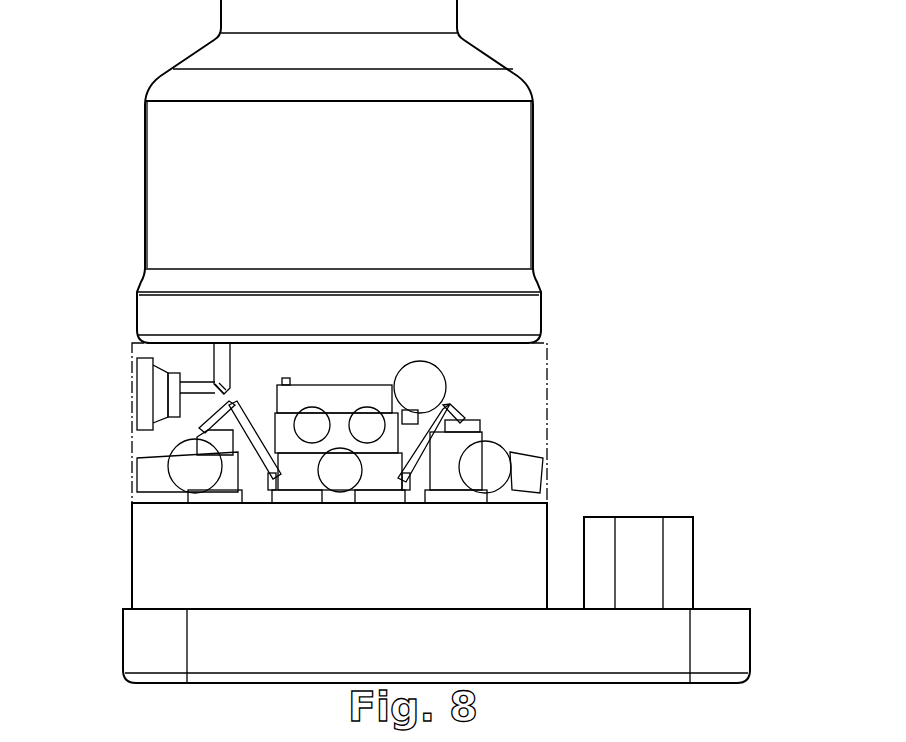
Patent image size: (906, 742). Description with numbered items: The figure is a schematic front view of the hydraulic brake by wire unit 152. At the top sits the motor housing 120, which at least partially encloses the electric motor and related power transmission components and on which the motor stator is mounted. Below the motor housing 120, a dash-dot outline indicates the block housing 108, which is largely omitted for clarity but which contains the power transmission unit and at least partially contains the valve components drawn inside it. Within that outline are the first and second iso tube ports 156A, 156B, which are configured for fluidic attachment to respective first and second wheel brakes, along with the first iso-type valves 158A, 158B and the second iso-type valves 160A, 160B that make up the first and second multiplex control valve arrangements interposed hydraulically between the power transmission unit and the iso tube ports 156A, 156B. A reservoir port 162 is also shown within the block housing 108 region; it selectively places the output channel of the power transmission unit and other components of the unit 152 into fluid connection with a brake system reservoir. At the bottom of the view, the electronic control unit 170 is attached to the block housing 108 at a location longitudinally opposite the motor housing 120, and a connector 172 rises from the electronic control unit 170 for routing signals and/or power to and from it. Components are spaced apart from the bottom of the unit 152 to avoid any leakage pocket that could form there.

The block housing 108 is at (547, 405).
The motor housing 120 is at (533, 202).
The hydraulic brake by wire unit 152 is at (678, 220).
The first iso tube port 156A is at (193, 470).
The second iso tube port 156B is at (488, 465).
The first iso-type valve 158A is at (217, 497).
The first iso-type valve 158B is at (458, 497).
The second iso-type valve 160A is at (292, 495).
The second iso-type valve 160B is at (377, 497).
The reservoir port 162 is at (424, 382).
The electronic control unit 170 is at (752, 642).
The connector 172 is at (695, 553).